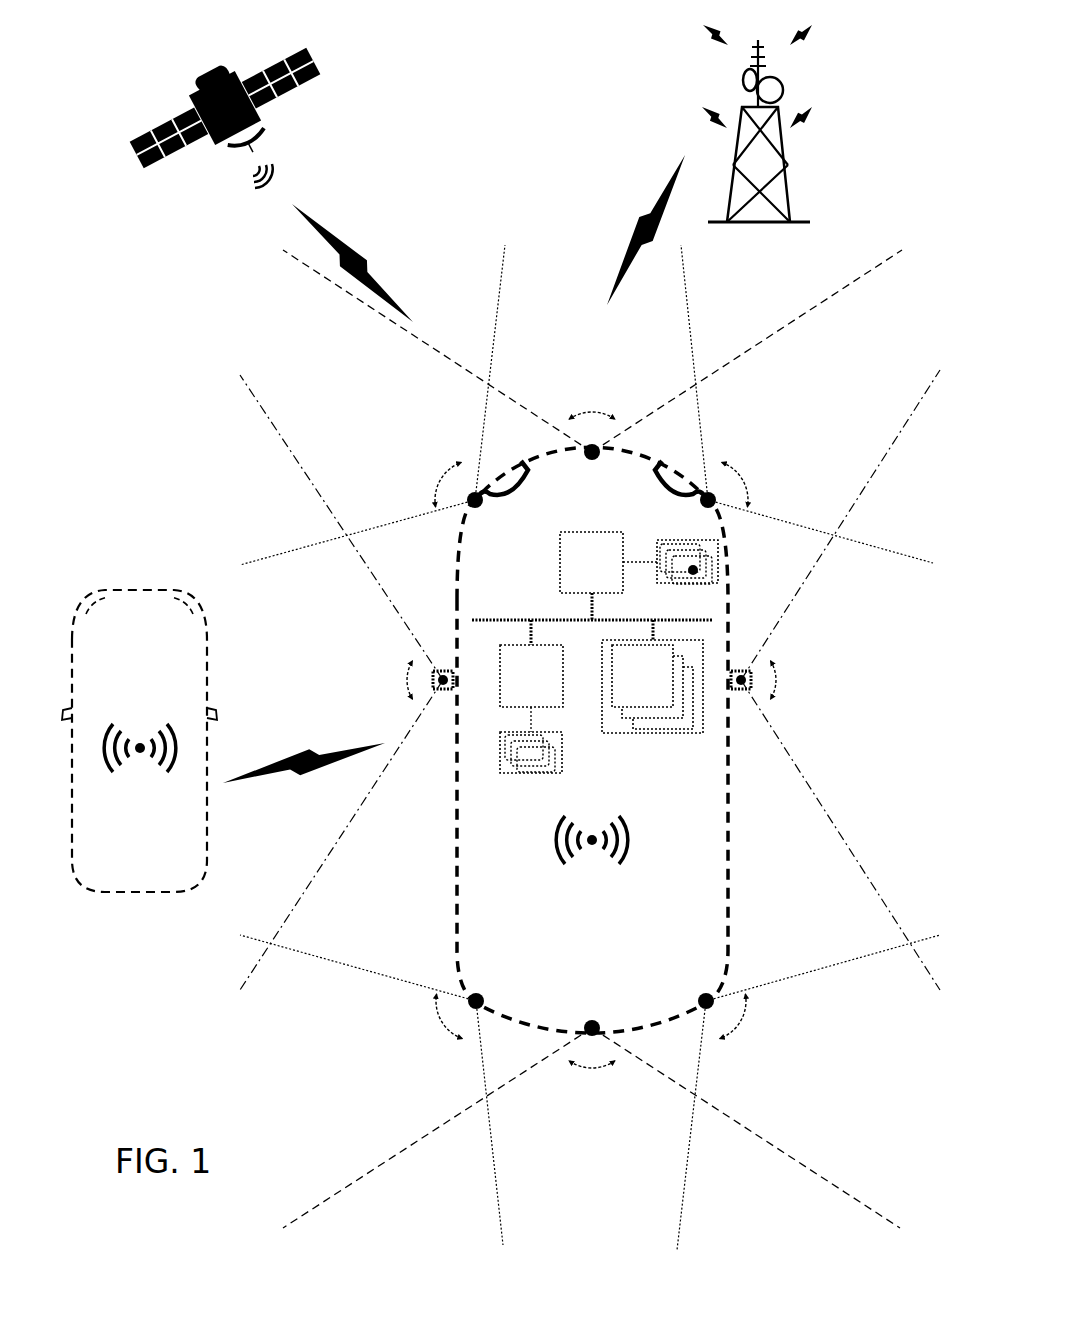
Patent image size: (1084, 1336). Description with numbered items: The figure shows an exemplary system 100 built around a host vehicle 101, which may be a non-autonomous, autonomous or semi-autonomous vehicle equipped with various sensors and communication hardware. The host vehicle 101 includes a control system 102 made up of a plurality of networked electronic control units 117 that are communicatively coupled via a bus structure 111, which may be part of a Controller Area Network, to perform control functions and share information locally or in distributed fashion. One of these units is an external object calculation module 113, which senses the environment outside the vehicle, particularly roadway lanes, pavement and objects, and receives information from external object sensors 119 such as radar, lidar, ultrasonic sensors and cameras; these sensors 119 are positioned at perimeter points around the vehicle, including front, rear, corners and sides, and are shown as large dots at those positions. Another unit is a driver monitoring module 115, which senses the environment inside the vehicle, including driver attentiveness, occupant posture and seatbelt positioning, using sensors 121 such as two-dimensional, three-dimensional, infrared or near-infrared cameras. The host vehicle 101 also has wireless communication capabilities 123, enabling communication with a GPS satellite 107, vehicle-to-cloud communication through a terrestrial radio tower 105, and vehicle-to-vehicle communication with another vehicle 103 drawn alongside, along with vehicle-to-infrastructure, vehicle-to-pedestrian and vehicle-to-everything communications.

The system 100 is at (540, 65).
The host vehicle 101 is at (727, 806).
The control system 102 is at (568, 508).
The other vehicle 103 is at (138, 590).
The terrestrial radio tower 105 is at (820, 193).
The GPS satellite 107 is at (178, 74).
The bus structure 111 is at (535, 594).
The external object calculation module 113 is at (608, 562).
The driver monitoring module 115 is at (531, 688).
The electronic control units 117 is at (652, 686).
The external object sensors 119 is at (696, 548).
The sensors 121 is at (530, 772).
The wireless communication capabilities 123 is at (640, 840).